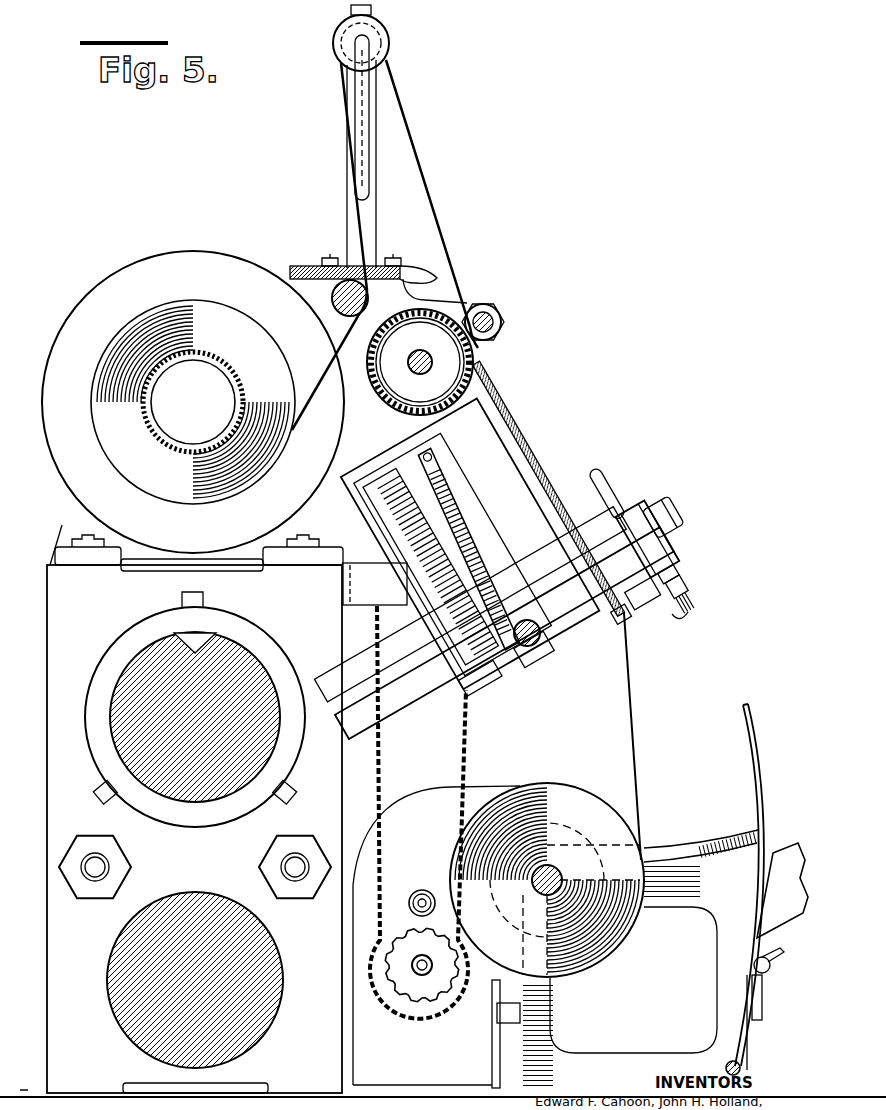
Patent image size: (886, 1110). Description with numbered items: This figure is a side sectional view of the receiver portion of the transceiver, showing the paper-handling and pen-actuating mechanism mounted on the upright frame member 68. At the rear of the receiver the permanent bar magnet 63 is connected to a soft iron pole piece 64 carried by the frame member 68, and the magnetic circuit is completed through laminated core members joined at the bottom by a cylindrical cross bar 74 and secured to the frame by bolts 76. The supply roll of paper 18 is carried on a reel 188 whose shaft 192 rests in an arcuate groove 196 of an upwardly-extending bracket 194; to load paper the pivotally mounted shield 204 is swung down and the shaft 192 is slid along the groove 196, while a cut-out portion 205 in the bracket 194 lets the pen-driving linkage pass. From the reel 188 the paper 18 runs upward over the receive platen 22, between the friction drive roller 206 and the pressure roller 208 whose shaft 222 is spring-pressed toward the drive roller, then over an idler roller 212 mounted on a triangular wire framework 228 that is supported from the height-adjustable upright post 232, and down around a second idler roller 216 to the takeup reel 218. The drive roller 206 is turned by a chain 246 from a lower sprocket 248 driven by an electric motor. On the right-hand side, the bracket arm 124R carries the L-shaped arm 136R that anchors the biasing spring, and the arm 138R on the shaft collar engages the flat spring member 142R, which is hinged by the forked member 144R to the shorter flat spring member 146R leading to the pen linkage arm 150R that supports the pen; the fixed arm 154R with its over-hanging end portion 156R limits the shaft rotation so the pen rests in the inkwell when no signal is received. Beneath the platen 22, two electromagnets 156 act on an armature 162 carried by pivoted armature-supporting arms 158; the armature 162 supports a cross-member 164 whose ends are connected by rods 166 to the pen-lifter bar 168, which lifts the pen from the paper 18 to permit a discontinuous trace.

The strip of paper 18 is at (405, 100).
The receive platen 22 is at (503, 430).
The permanent bar magnet 63 is at (232, 628).
The soft iron pole piece 64 is at (162, 685).
The upright frame member 68 is at (68, 522).
The cylindrical cross bar 74 is at (150, 965).
The bolt 76 is at (110, 862).
The bracket arm 124R is at (360, 670).
The L-shaped arm 136R is at (600, 472).
The arm 138R is at (642, 600).
The flat spring member 142R is at (690, 592).
The forked member 144R is at (686, 620).
The shorter flat spring member 146R is at (690, 602).
The pen linkage arm 150R is at (630, 512).
The fixed arm 154R is at (670, 542).
The electromagnet 156 is at (482, 578).
The over-hanging end portion 156R is at (688, 572).
The armature-supporting arm 158 is at (455, 540).
The armature 162 is at (500, 672).
The cross-member 164 is at (522, 650).
The rod 166 is at (575, 616).
The pen-lifter bar 168 is at (612, 600).
The reel 188 is at (560, 836).
The shaft 192 is at (505, 894).
The bracket 194 is at (790, 915).
The arcuate groove 196 is at (678, 860).
The shield 204 is at (758, 730).
The cut-out portion 205 is at (758, 826).
The friction drive roller 206 is at (395, 378).
The pressure roller 208 is at (507, 300).
The idler roller 212 is at (348, 36).
The second idler roller 216 is at (332, 298).
The takeup reel 218 is at (92, 300).
The shaft 222 is at (503, 332).
The triangular wire framework 228 is at (366, 130).
The upright post 232 is at (349, 236).
The chain 246 is at (468, 740).
The sprocket 248 is at (405, 1000).